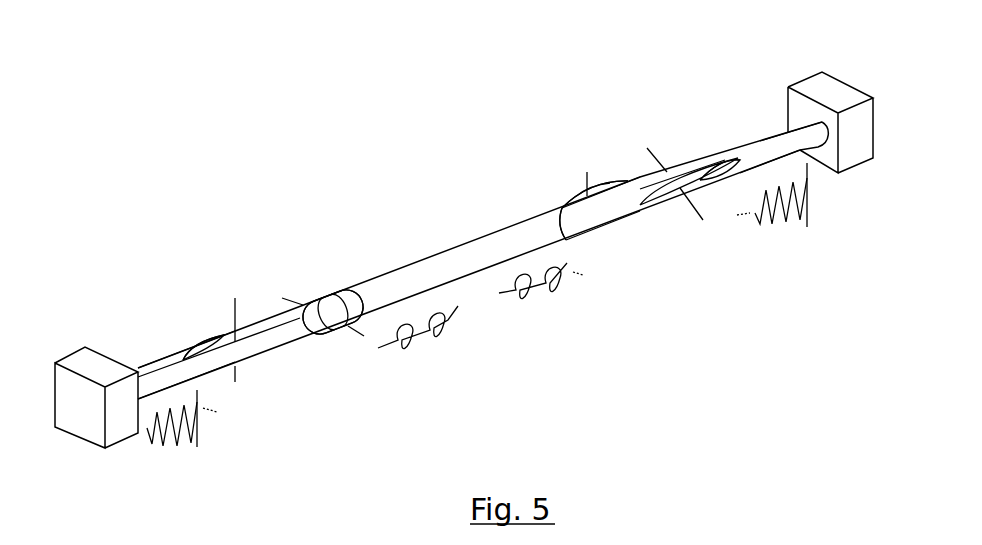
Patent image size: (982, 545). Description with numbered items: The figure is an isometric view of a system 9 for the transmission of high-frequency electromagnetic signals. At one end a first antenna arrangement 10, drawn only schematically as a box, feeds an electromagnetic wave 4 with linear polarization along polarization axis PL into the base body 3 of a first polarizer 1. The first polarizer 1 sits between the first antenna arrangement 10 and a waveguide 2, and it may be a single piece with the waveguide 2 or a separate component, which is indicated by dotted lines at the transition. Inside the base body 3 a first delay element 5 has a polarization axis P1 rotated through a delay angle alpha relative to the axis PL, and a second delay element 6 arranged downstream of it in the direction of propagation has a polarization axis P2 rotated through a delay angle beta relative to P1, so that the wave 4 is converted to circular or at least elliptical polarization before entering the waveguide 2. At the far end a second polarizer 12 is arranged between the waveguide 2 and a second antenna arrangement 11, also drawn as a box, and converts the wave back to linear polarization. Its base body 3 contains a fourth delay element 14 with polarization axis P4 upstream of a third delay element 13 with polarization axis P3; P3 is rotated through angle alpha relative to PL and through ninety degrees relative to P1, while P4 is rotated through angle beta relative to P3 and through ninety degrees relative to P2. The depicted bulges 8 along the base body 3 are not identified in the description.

The first polarizer 1 is at (180, 240).
The waveguide 2 is at (456, 236).
The base body 3 is at (160, 366).
The electromagnetic wave 4 is at (153, 447).
The first delay element 5 is at (216, 320).
The second delay element 6 is at (311, 284).
The bulges 8 is at (246, 330).
The system 9 is at (200, 137).
The first antenna arrangement 10 is at (85, 357).
The second antenna arrangement 11 is at (820, 80).
The second polarizer 12 is at (619, 83).
The third delay element 13 is at (679, 146).
The fourth delay element 14 is at (576, 182).
The polarization axis of the first delay element P1 is at (235, 372).
The polarization axis of the second delay element P2 is at (347, 340).
The polarization axis of the third delay element P3 is at (690, 198).
The polarization axis of the fourth delay element P4 is at (593, 227).
The polarization axis of the electromagnetic wave PL is at (200, 445).